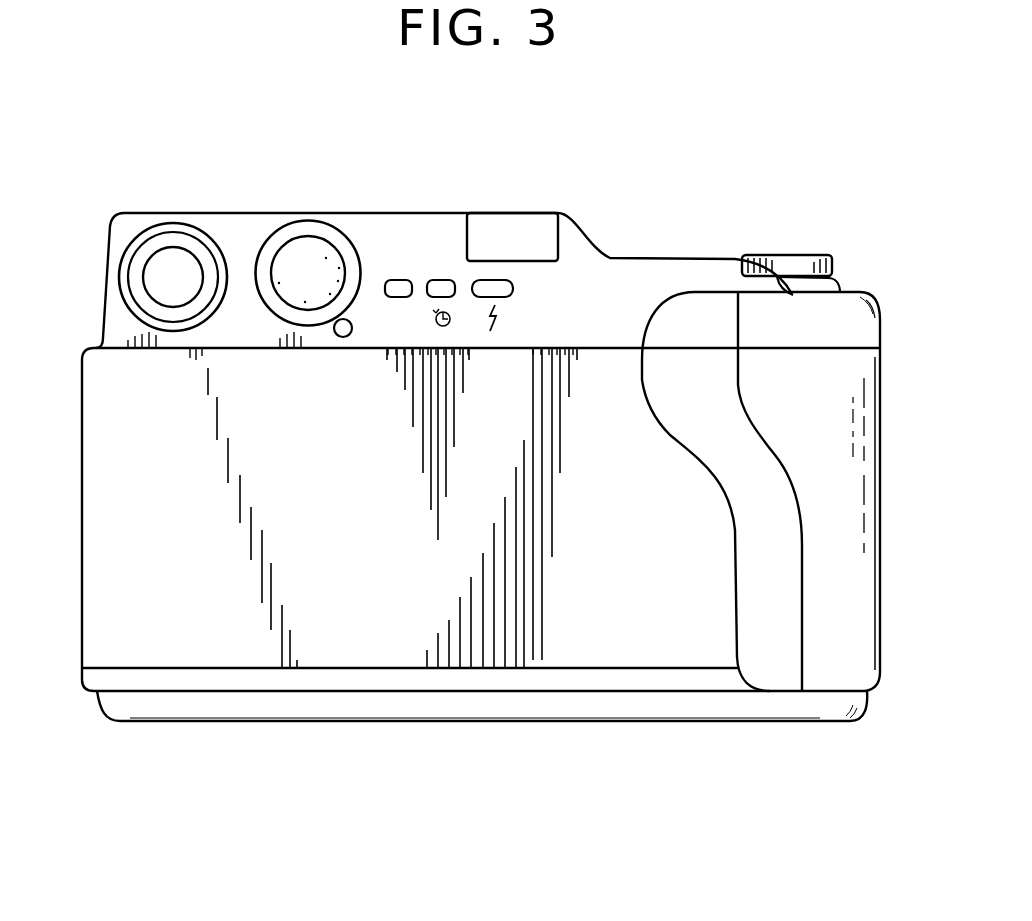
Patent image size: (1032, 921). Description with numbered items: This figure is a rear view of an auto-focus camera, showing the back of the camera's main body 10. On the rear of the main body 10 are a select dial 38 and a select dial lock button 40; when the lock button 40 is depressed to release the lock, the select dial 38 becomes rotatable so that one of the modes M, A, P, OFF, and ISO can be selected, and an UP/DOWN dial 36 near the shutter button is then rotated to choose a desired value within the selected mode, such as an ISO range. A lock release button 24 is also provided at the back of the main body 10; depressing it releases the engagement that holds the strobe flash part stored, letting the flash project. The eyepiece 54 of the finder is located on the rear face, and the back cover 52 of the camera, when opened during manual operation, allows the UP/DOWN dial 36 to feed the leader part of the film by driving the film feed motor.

The camera's main body 10 is at (697, 121).
The lock release button 24 is at (508, 293).
The UP/DOWN dial 36 is at (800, 267).
The select dial 38 is at (320, 230).
The select dial lock button 40 is at (336, 337).
The back cover 52 is at (387, 655).
The eyepiece 54 is at (180, 267).